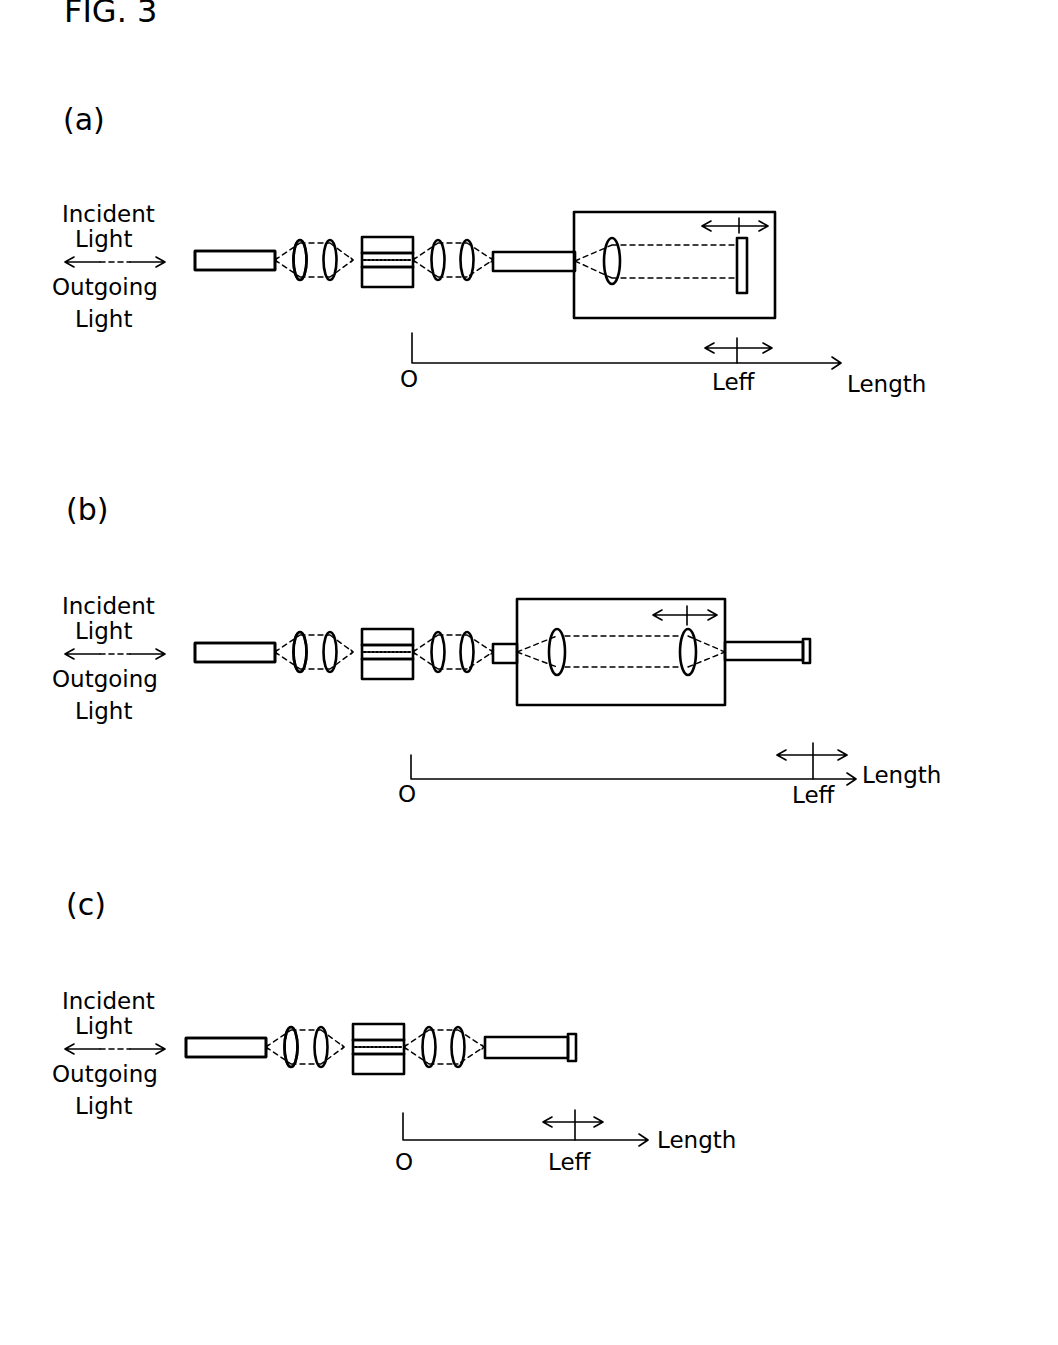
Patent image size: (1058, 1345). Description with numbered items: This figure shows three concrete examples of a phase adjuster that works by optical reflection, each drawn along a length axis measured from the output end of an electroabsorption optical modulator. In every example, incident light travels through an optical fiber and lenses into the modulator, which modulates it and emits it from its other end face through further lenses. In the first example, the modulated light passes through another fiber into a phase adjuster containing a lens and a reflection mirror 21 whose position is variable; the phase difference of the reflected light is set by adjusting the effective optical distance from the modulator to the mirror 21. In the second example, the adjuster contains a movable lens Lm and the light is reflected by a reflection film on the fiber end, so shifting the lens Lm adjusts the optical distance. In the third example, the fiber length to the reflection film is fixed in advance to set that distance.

The reflection mirror 21 is at (752, 262).
The movable lens Lm is at (667, 685).